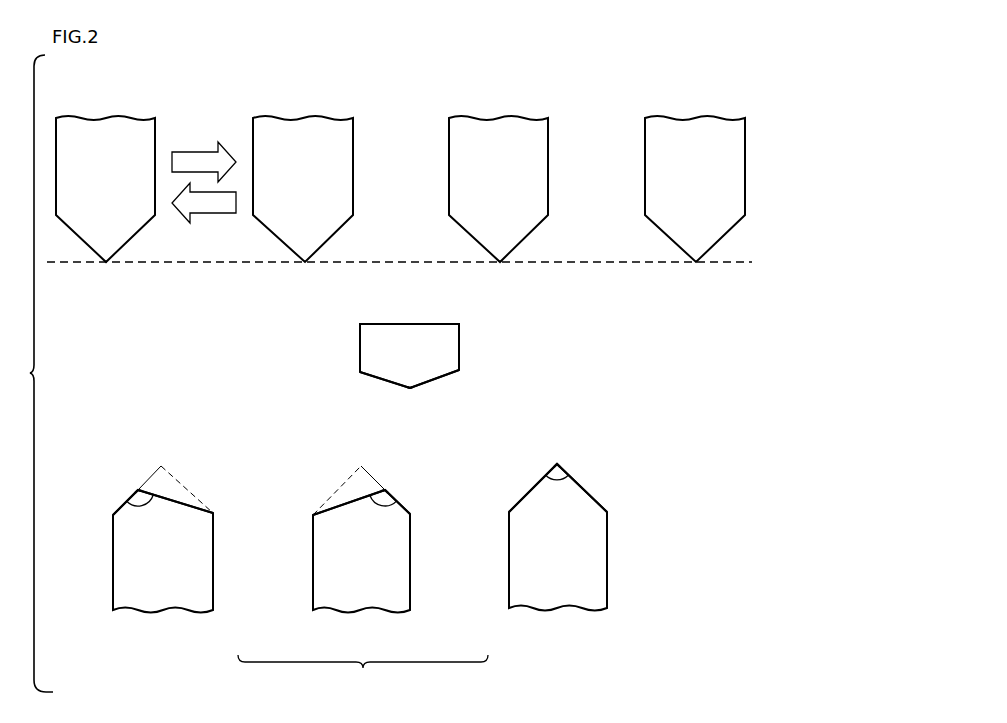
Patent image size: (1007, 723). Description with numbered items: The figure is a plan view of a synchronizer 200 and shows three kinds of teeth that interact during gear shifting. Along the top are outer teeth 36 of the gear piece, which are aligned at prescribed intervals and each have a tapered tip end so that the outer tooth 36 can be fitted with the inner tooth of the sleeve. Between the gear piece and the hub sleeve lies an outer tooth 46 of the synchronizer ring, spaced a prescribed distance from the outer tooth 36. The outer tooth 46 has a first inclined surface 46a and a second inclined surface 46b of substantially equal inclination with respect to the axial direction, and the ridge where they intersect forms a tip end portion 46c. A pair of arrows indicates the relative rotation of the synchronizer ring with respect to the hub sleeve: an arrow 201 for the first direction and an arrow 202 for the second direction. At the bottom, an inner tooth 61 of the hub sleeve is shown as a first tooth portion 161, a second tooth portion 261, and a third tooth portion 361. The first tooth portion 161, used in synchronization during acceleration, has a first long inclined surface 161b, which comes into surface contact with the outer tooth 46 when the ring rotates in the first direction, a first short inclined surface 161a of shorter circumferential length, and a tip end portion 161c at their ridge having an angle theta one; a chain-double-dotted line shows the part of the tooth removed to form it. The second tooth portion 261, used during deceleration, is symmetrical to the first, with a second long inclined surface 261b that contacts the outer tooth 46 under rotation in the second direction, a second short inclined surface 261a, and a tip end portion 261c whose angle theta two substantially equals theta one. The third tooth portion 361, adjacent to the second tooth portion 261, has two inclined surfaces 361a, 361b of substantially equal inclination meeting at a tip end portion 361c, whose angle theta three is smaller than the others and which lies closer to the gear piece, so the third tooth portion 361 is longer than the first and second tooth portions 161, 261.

The outer tooth 36 is at (105, 140).
The arrow 202 is at (194, 150).
The arrow 201 is at (214, 215).
The synchronizer 200 is at (857, 85).
The outer tooth 46 is at (373, 349).
The first inclined surface 46a is at (377, 378).
The second inclined surface 46b is at (438, 380).
The tip end portion 46c is at (410, 388).
The first tooth portion 161 is at (195, 565).
The first short inclined surface 161a is at (125, 502).
The first long inclined surface 161b is at (187, 500).
The tip end portion 161c is at (138, 489).
The second tooth portion 261 is at (362, 592).
The second short inclined surface 261a is at (402, 502).
The second long inclined surface 261b is at (340, 502).
The tip end portion 261c is at (385, 489).
The third tooth portion 361 is at (527, 563).
The inclined surface 361a is at (527, 497).
The inclined surface 361b is at (588, 497).
The tip end portion 361c is at (557, 462).
The inner tooth 61 is at (363, 673).